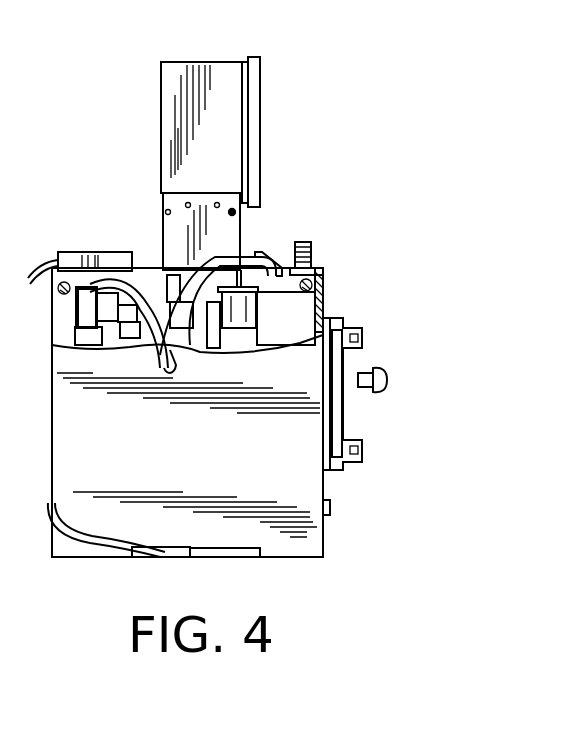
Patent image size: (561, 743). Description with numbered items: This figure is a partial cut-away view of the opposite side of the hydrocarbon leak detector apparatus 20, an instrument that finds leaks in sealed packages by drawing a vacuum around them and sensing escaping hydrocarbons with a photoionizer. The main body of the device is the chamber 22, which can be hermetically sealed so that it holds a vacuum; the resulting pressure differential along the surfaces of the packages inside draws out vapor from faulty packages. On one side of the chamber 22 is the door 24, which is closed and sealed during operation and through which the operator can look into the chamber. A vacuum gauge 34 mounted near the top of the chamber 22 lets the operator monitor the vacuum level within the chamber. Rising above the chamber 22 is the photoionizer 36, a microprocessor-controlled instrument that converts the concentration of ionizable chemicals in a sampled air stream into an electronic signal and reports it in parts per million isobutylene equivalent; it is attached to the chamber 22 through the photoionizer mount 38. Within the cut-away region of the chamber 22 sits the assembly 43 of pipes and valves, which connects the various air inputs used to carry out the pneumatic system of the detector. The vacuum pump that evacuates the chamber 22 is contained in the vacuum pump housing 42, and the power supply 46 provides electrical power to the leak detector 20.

The hydrocarbon leak detector apparatus 20 is at (325, 100).
The chamber 22 is at (80, 435).
The door 24 is at (332, 318).
The vacuum gauge 34 is at (301, 243).
The photoionizer 36 is at (176, 113).
The photoionizer mount 38 is at (180, 205).
The vacuum pump housing 42 is at (307, 532).
The assembly of pipes and valves 43 is at (98, 324).
The power supply 46 is at (79, 265).